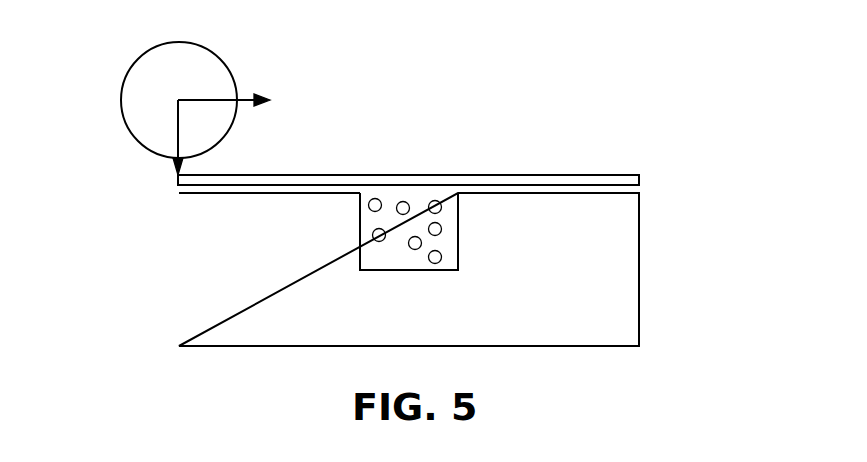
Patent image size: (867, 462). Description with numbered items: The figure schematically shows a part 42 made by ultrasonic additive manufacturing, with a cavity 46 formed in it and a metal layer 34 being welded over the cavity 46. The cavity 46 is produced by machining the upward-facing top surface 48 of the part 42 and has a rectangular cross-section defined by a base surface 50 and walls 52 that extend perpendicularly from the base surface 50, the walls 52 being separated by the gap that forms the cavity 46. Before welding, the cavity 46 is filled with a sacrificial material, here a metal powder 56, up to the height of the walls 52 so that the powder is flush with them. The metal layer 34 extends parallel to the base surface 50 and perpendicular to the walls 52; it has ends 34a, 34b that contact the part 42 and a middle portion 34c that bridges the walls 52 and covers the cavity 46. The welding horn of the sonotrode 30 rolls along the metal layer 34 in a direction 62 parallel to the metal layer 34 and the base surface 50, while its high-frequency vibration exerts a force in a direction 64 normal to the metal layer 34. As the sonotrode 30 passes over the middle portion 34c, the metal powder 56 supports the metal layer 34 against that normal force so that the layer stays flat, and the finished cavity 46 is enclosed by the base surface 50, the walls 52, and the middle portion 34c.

The sonotrode 30 is at (170, 70).
The direction 62 is at (224, 98).
The direction 64 is at (177, 128).
The metal layer 34 is at (588, 180).
The end 34a is at (182, 178).
The end 34b is at (639, 179).
The middle portion 34c is at (366, 175).
The part 42 is at (603, 320).
The top surface 48 is at (582, 195).
The walls 52 is at (360, 231).
The base surface 50 is at (378, 270).
The cavity 46 is at (407, 262).
The metal powder 56 is at (413, 202).